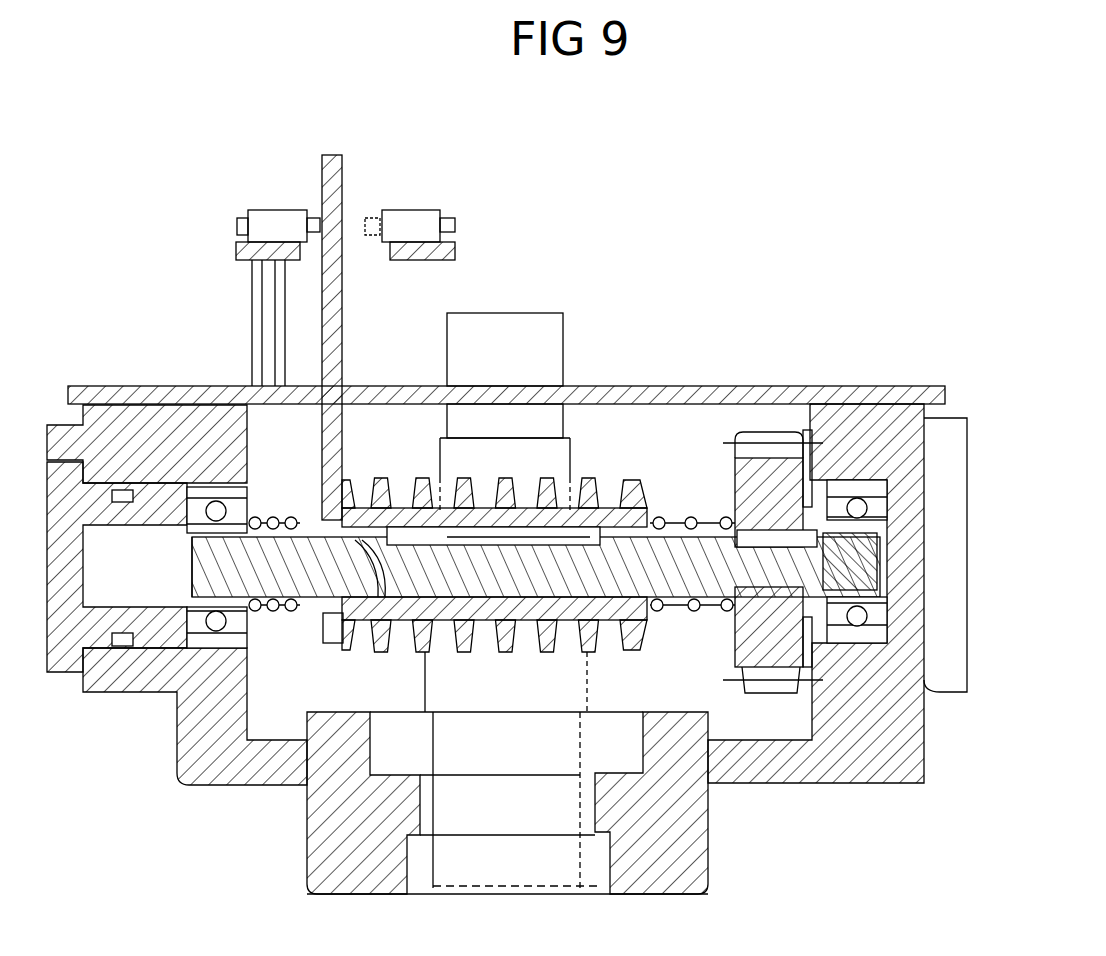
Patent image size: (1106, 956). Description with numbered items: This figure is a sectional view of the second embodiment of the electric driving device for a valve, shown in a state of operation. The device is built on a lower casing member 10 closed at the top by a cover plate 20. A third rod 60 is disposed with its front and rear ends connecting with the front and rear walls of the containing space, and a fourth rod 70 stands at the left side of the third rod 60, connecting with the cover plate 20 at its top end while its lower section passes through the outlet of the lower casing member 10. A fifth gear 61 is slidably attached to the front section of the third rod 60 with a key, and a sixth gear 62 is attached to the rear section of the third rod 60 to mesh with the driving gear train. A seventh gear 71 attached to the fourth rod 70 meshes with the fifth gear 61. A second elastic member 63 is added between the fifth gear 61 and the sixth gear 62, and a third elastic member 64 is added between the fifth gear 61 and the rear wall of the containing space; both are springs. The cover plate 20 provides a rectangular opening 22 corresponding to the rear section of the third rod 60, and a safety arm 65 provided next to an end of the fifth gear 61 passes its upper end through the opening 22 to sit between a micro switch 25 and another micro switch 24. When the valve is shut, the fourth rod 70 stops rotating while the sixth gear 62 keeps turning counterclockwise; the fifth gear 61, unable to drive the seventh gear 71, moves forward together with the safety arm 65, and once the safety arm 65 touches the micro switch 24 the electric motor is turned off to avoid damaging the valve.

The lower casing member 10 is at (287, 820).
The cover plate 20 is at (127, 388).
The rectangular opening 22 is at (363, 390).
The micro switch 24 is at (283, 218).
The micro switch 25 is at (420, 223).
The third rod member 60 is at (920, 562).
The fifth gear 61 is at (598, 482).
The sixth gear 62 is at (777, 653).
The second elastic member 63 is at (691, 518).
The third elastic member 64 is at (273, 605).
The safety arm 65 is at (332, 187).
The fourth rod member 70 is at (565, 330).
The seventh gear 71 is at (647, 593).